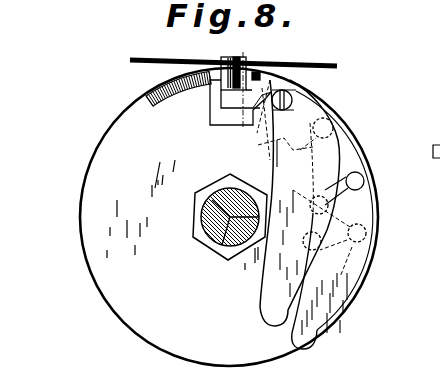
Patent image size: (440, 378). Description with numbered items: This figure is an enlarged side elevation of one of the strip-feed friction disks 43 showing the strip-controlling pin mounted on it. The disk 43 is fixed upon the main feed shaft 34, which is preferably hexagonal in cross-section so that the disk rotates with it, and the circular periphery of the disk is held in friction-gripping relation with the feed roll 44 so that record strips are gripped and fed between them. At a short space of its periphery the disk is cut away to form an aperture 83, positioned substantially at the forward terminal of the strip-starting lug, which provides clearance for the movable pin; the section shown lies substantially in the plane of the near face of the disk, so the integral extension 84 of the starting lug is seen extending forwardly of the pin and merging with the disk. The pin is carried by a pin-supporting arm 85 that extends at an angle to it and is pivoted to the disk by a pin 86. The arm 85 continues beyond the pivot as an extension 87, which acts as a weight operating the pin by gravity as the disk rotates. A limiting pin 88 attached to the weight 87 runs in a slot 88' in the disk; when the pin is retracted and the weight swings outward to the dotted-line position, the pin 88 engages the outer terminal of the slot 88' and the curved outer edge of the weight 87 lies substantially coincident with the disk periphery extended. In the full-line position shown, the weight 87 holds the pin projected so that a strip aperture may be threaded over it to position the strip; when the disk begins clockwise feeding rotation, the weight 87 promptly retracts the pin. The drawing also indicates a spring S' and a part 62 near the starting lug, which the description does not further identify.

The strip-feed friction disk 43 is at (81, 212).
The feed roll 44 is at (148, 98).
The integral extension of the starting lug 84 is at (298, 66).
The spring S' is at (242, 98).
The aperture 83 is at (207, 113).
The pin 62 is at (243, 60).
The pivot pin 86 is at (294, 98).
The arm extension 87 is at (270, 305).
The pin-supporting arm 85 is at (250, 102).
The limiting pin 88 is at (329, 236).
The slot 88' is at (374, 197).
The main feed shaft 34 is at (207, 243).